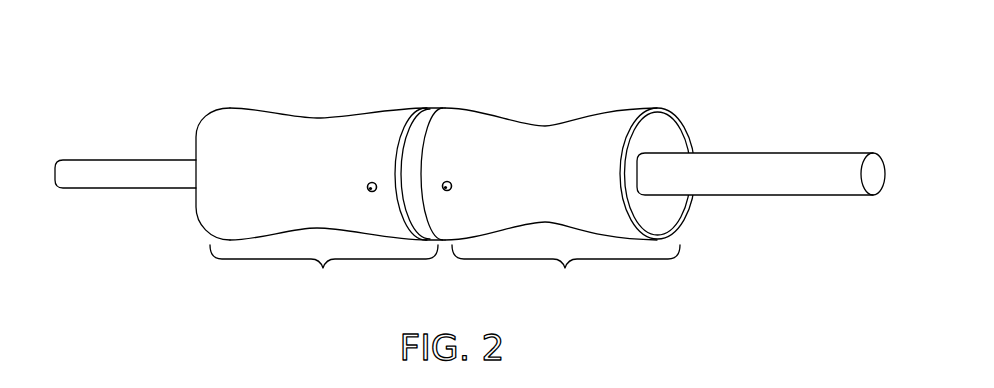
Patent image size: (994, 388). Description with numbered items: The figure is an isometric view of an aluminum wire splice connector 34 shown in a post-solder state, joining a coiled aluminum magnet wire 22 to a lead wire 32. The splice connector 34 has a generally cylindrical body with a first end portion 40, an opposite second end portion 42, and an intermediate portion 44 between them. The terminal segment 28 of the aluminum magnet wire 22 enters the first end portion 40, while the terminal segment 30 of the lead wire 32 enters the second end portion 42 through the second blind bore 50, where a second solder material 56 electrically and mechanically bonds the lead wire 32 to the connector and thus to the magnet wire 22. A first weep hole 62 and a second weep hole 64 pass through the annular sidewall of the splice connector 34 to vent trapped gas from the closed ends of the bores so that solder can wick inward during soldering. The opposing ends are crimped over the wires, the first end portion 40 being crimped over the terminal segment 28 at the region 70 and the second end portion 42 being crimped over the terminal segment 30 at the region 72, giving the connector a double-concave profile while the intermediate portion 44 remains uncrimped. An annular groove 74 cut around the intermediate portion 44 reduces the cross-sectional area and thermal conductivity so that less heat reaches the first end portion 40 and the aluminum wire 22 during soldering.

The coiled aluminum magnet wire 22 is at (123, 128).
The terminal segment of coiled aluminum magnet wire 28 is at (162, 160).
The first end portion 40 is at (246, 107).
The intermediate portion 44 is at (377, 106).
The annular groove 74 is at (437, 108).
The first weep hole 62 is at (372, 182).
The second weep hole 64 is at (447, 181).
The crimp of first end portion 70 is at (324, 275).
The aluminum wire splice connector 34 is at (588, 131).
The second end portion 42 is at (617, 111).
The second solder material 56 is at (666, 121).
The second blind bore 50 is at (676, 213).
The crimp of second end portion 72 is at (566, 275).
The terminal segment of lead wire 30 is at (747, 153).
The lead wire 32 is at (761, 128).